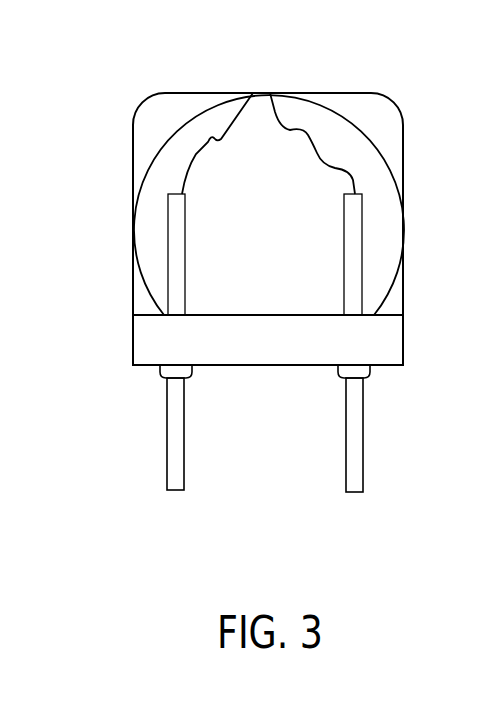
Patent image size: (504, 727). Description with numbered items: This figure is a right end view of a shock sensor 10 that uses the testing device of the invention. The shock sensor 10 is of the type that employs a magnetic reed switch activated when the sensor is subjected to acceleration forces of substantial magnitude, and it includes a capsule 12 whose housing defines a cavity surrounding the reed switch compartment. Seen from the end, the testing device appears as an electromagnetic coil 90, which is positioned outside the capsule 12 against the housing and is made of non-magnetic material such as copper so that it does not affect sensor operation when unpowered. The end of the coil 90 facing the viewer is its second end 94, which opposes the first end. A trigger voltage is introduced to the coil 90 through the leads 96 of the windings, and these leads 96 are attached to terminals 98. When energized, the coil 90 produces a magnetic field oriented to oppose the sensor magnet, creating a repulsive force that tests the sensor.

The shock sensor 10 is at (394, 96).
The capsule 12 is at (403, 163).
The electromagnetic coil 90 is at (400, 193).
The second end 94 is at (377, 268).
The leads 96 is at (235, 115).
The terminals 98 is at (167, 447).